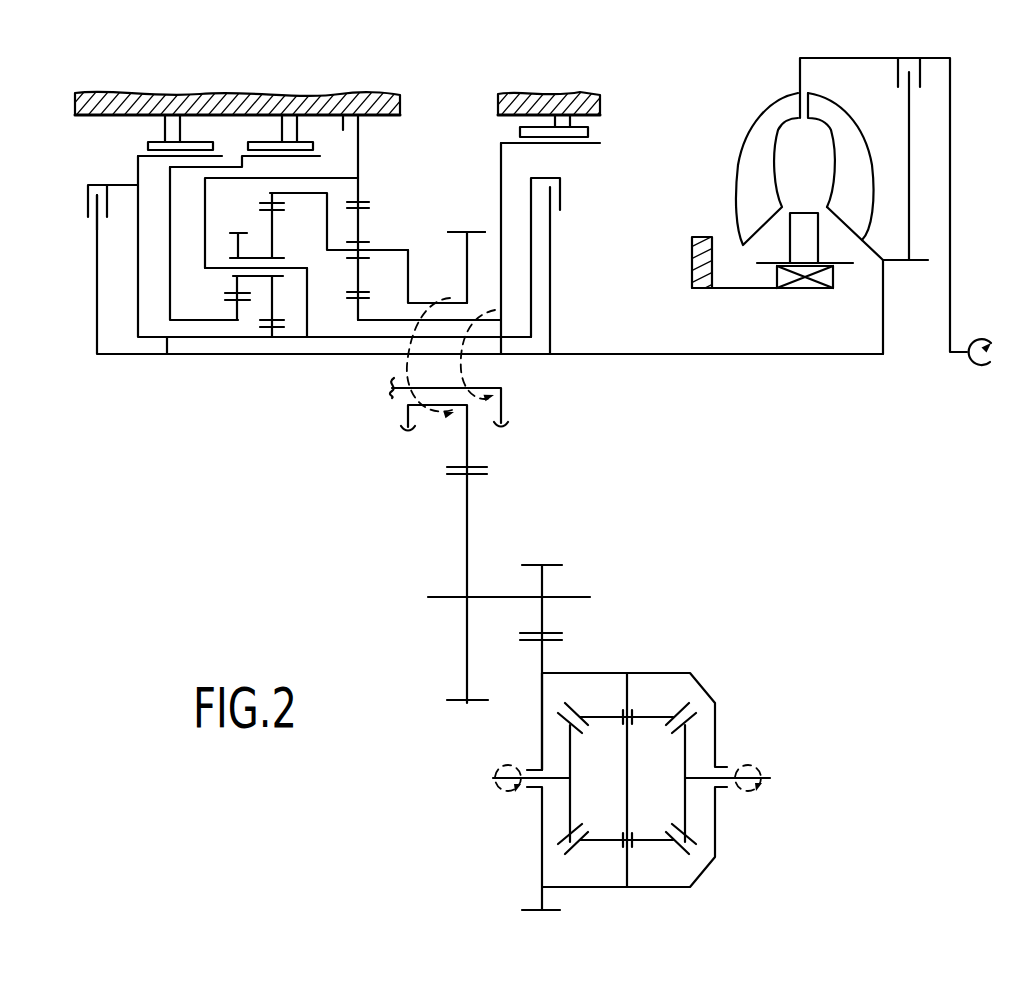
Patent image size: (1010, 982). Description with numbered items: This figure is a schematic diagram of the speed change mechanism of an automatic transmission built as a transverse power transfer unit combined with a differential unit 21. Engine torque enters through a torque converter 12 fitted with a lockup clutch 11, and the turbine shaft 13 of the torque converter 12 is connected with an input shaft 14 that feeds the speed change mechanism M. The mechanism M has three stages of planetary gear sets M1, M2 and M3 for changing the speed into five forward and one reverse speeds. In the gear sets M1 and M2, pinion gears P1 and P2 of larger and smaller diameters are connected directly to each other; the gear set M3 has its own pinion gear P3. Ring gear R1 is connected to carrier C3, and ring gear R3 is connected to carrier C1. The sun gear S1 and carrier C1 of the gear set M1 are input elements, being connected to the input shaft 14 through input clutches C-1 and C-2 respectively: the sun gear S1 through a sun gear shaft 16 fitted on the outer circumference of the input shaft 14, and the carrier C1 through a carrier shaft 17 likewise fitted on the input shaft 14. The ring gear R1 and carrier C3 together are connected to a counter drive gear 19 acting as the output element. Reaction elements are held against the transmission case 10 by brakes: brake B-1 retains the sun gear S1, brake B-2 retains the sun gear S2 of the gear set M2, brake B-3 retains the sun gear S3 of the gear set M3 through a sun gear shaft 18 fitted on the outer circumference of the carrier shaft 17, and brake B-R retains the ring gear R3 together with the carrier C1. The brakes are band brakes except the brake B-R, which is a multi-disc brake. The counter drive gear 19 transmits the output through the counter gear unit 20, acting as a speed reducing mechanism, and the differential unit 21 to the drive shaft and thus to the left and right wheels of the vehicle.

The transmission case 10 is at (92, 92).
The lockup clutch 11 is at (898, 72).
The torque converter 12 is at (776, 100).
The turbine shaft 13 is at (765, 356).
The input shaft 14 is at (606, 356).
The sun gear shaft 16 is at (167, 356).
The carrier shaft 17 is at (502, 356).
The sun gear shaft 18 is at (505, 309).
The counter drive gear 19 is at (474, 232).
The counter gear unit 20 is at (514, 552).
The differential unit 21 is at (726, 684).
The speed change mechanism M is at (398, 72).
The first planetary gear set M1 is at (277, 366).
The second planetary gear set M2 is at (238, 369).
The third planetary gear set M3 is at (370, 363).
The brake B-1 is at (165, 120).
The brake B-2 is at (297, 117).
The brake B-3 is at (567, 117).
The brake B-R is at (372, 118).
The input clutch C-1 is at (94, 183).
The input clutch C-2 is at (538, 178).
The ring gear R1 is at (268, 205).
The pinion gear P1 is at (275, 230).
The carrier C1 is at (296, 262).
The sun gear S1 is at (273, 333).
The pinion gear P2 is at (233, 287).
The sun gear S2 is at (232, 303).
The ring gear R3 is at (362, 210).
The pinion gear P3 is at (360, 230).
The carrier C3 is at (379, 250).
The sun gear S3 is at (360, 300).